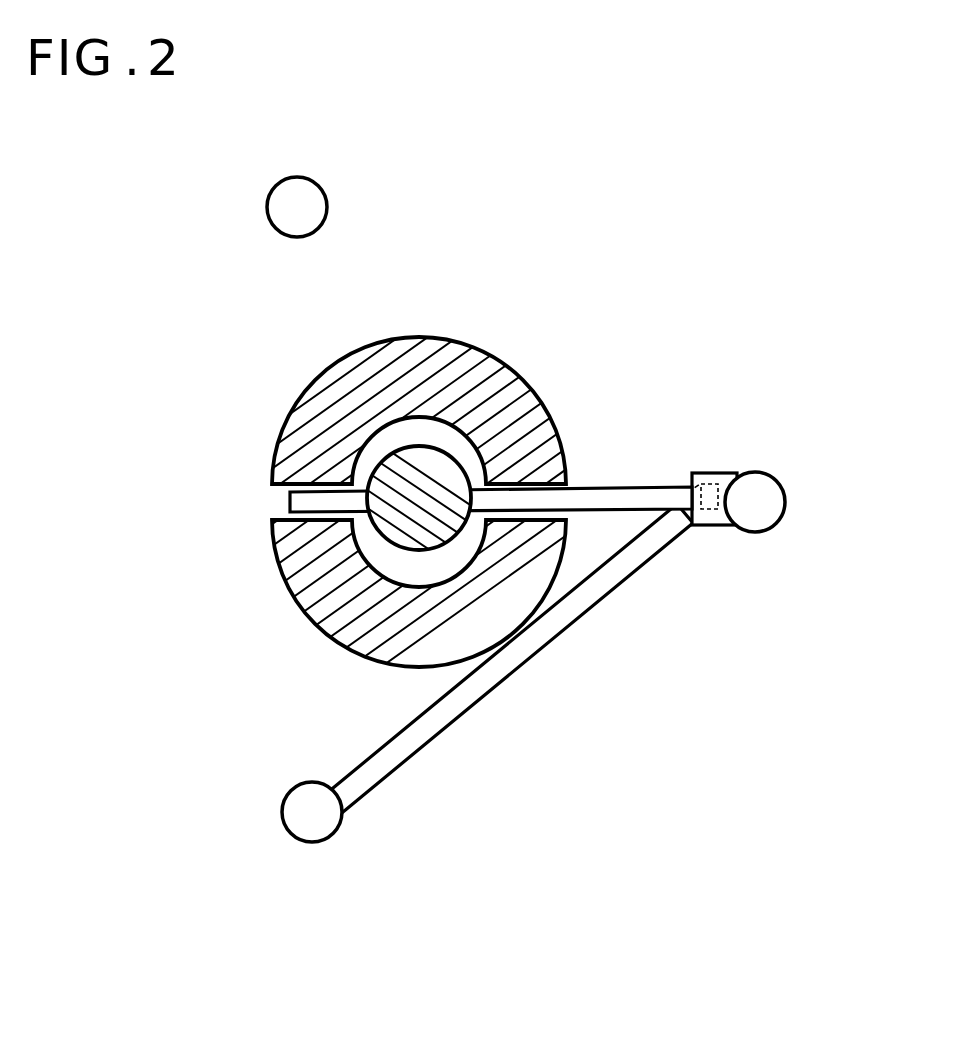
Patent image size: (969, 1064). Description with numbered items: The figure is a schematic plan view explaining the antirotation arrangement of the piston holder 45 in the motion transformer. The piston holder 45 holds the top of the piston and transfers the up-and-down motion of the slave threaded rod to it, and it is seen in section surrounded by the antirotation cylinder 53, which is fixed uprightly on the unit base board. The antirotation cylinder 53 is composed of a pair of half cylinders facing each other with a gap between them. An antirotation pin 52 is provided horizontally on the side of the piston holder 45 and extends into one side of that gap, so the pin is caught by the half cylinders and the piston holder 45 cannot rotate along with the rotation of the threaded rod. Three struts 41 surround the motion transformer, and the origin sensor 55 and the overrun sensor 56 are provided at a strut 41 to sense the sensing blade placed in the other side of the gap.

The struts 41 is at (287, 218).
The piston holder 45 is at (434, 547).
The antirotation pin 52 is at (290, 501).
The antirotation cylinder 53 is at (517, 390).
The origin sensor 55 is at (721, 473).
The overrun sensor 56 is at (550, 625).